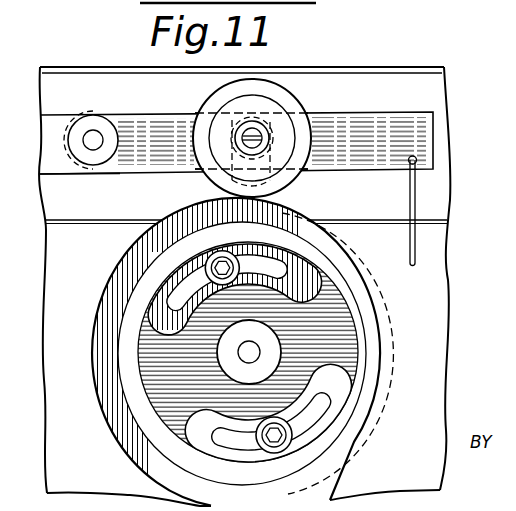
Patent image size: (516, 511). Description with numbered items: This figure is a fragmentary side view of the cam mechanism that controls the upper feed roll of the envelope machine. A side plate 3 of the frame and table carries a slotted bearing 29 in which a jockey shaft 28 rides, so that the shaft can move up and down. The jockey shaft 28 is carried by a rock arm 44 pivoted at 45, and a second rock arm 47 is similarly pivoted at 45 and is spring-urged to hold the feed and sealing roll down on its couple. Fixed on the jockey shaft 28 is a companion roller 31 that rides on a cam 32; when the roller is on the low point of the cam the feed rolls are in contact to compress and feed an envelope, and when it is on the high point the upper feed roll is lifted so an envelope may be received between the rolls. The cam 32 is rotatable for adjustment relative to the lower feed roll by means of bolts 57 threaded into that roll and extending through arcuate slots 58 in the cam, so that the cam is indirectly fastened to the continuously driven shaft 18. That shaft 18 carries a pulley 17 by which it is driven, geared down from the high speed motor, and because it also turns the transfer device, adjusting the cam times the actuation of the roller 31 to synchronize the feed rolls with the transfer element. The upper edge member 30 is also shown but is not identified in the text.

The side plate 3 is at (442, 211).
The pulley 17 is at (368, 336).
The shaft 18 is at (259, 347).
The jockey shaft 28 is at (246, 132).
The slotted bearing 29 is at (283, 176).
The top edge 30 is at (386, 73).
The companion roller 31 is at (362, 107).
The cam 32 is at (136, 253).
The rock arm 44 is at (497, 134).
The pivot 45 is at (138, 99).
The rock arm 47 is at (102, 199).
The bolts 57 is at (226, 271).
The arcuate slots 58 is at (296, 272).